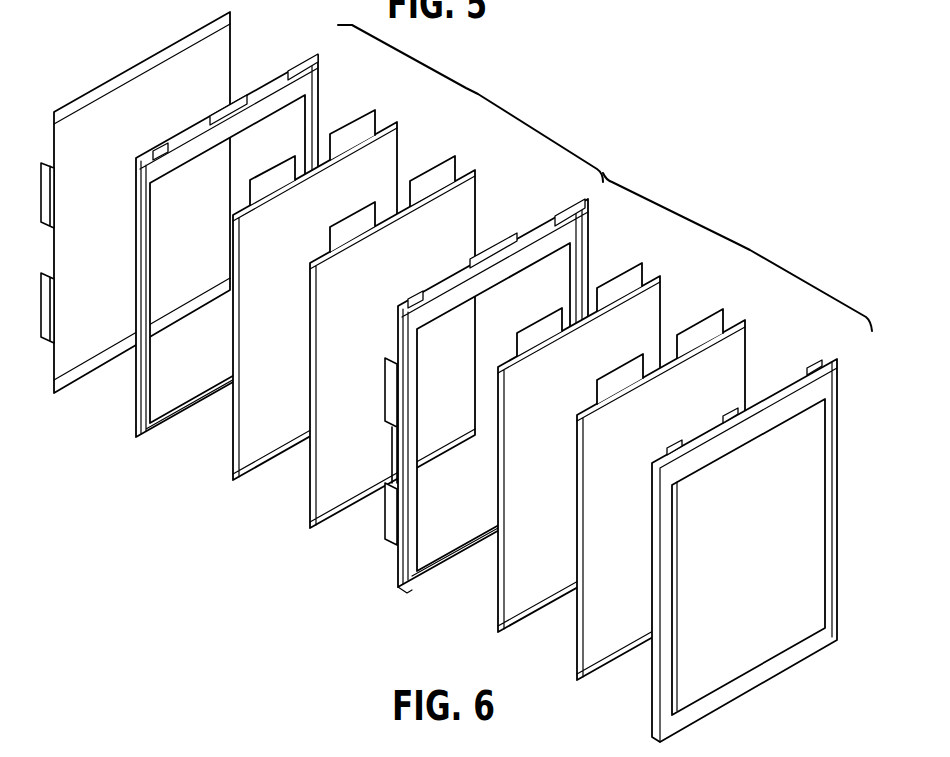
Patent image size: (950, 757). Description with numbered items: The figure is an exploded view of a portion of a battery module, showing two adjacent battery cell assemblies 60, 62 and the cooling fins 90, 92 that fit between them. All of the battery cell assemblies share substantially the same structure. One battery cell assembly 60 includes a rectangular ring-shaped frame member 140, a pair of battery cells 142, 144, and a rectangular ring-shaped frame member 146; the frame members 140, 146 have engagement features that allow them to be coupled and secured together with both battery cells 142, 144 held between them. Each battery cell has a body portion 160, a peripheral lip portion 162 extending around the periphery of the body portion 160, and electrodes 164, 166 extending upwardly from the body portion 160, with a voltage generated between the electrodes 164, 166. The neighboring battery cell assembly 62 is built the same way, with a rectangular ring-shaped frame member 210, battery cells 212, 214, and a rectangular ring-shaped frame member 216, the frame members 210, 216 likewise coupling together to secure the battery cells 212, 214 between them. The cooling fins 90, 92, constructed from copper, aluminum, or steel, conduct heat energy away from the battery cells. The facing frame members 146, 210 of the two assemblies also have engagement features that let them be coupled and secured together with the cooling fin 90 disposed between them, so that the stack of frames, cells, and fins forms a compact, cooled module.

The battery cell assembly 60 is at (470, 103).
The battery cell assembly 62 is at (737, 252).
The cooling fin 90 is at (392, 517).
The cooling fin 92 is at (45, 312).
The rectangular ring-shaped frame member 140 is at (832, 412).
The battery cell 142 is at (733, 378).
The battery cell 144 is at (655, 298).
The rectangular ring-shaped frame member 146 is at (590, 255).
The body portion 160 is at (610, 633).
The peripheral lip portion 162 is at (708, 607).
The electrode 164 is at (627, 373).
The electrode 166 is at (713, 320).
The rectangular ring-shaped frame member 210 is at (567, 213).
The battery cell 212 is at (462, 220).
The battery cell 214 is at (378, 172).
The rectangular ring-shaped frame member 216 is at (272, 82).